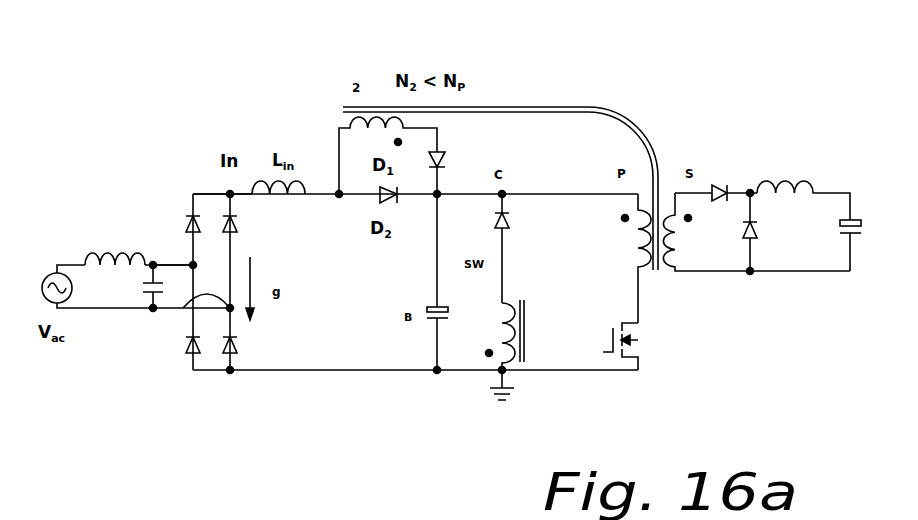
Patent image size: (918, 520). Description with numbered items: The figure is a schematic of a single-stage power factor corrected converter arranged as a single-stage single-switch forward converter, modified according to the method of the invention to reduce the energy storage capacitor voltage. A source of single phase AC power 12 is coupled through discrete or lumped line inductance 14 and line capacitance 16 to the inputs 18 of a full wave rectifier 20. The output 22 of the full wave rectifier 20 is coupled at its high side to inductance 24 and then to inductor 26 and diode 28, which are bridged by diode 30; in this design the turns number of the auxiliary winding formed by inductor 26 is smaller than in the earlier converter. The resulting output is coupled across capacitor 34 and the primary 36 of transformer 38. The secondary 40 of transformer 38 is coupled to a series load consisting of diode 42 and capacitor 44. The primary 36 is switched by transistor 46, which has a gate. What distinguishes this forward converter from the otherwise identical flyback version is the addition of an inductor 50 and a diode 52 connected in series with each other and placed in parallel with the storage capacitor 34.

The source of single phase AC power 12 is at (50, 274).
The line inductance 14 is at (97, 252).
The line capacitance 16 is at (142, 287).
The inputs of full wave rectifier 18 is at (192, 266).
The full wave rectifier 20 is at (262, 346).
The output of full wave rectifier 22 is at (228, 193).
The inductance 24 is at (258, 182).
The inductor 26 is at (358, 112).
The diode 28 is at (447, 160).
The diode 30 is at (380, 199).
The capacitor 34 is at (423, 313).
The primary of transformer 36 is at (638, 240).
The transformer 38 is at (670, 178).
The secondary of transformer 40 is at (673, 257).
The diode 42 is at (720, 182).
The capacitor 44 is at (860, 215).
The transistor 46 is at (647, 340).
The inductor 50 is at (527, 332).
The diode 52 is at (513, 218).